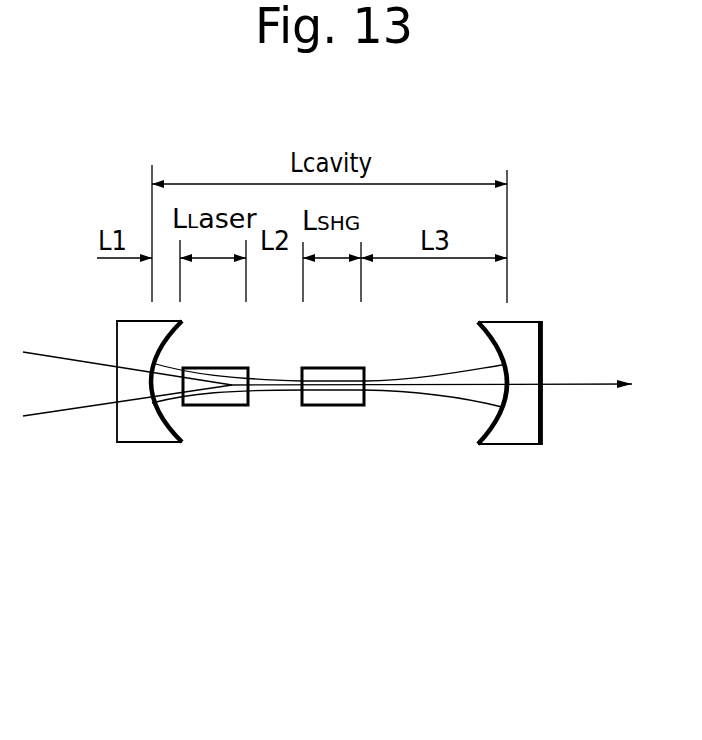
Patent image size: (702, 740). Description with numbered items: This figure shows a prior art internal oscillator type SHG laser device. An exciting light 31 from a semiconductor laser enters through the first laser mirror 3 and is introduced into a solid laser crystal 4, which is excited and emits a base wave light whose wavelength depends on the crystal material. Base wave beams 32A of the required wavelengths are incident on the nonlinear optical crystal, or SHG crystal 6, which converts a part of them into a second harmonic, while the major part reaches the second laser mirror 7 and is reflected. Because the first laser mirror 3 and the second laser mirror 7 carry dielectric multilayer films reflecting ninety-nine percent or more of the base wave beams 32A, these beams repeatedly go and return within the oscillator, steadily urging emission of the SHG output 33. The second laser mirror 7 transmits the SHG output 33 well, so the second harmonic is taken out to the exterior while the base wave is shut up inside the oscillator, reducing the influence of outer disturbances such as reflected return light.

The first laser mirror 3 is at (143, 438).
The solid laser crystal 4 is at (212, 407).
The nonlinear optical crystal (SHG crystal) 6 is at (346, 407).
The second laser mirror 7 is at (517, 437).
The exciting light 31 is at (60, 372).
The base wave beams 32A is at (276, 384).
The second harmonic (SHG output) 33 is at (580, 387).